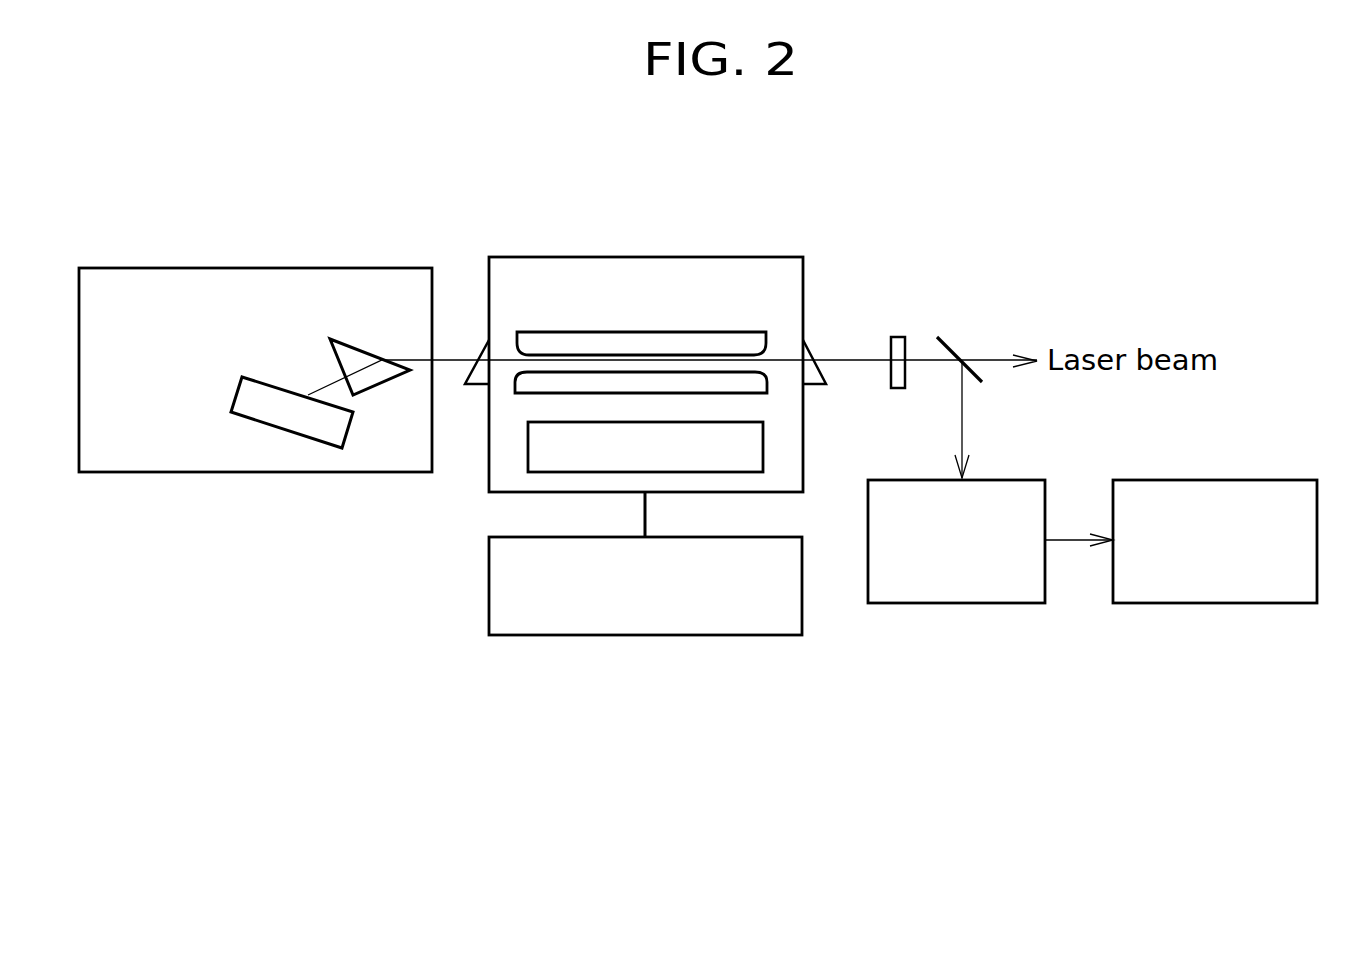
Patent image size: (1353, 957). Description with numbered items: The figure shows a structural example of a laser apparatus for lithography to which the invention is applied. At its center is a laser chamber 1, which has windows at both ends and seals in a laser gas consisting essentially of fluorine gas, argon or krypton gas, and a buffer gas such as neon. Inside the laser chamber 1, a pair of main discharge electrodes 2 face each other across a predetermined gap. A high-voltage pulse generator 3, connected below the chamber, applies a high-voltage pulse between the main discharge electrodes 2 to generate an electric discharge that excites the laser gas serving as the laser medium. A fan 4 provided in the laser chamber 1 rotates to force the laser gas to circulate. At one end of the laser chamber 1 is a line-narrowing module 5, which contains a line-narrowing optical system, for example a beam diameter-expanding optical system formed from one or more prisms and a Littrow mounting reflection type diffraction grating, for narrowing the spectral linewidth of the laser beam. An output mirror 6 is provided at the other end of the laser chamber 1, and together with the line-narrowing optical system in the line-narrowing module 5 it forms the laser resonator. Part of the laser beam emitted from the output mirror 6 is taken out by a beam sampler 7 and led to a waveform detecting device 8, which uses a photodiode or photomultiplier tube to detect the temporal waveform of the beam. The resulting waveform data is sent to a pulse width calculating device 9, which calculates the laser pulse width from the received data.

The laser chamber 1 is at (651, 257).
The main discharge electrodes 2 is at (745, 379).
The high-voltage pulse generator 3 is at (651, 637).
The fan 4 is at (528, 458).
The line-narrowing module 5 is at (261, 268).
The output mirror 6 is at (900, 337).
The beam sampler 7 is at (958, 352).
The waveform detecting device 8 is at (975, 605).
The pulse width calculating device 9 is at (1218, 605).